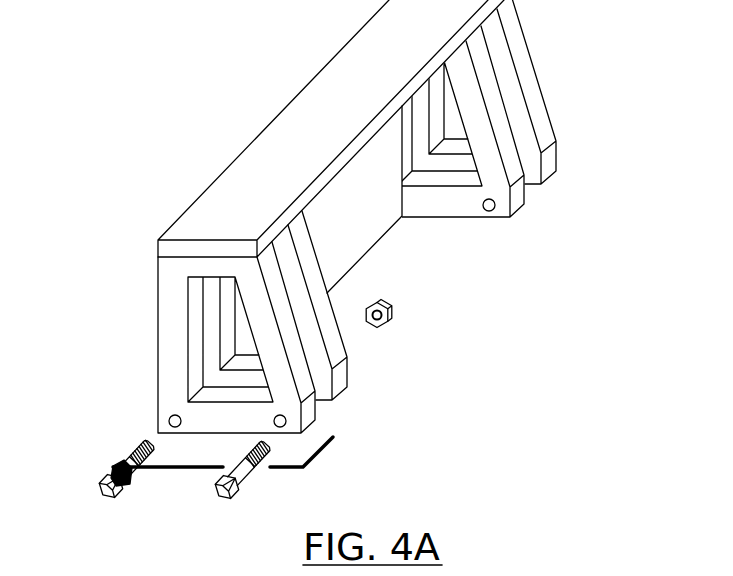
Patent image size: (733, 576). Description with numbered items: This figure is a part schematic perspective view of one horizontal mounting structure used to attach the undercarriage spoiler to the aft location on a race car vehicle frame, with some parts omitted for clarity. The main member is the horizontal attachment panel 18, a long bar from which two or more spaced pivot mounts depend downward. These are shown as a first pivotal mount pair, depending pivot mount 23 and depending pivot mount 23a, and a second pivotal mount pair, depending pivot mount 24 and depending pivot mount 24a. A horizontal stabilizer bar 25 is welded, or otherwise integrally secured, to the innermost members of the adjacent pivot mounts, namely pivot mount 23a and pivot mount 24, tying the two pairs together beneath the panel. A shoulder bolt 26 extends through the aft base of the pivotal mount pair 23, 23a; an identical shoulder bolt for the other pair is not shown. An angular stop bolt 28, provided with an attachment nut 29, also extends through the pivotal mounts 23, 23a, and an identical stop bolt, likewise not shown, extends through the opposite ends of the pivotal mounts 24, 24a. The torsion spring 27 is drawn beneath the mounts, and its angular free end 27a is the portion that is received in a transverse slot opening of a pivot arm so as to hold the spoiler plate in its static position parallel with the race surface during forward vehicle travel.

The horizontal attachment panel 18 is at (341, 49).
The depending pivot mount 23 is at (296, 322).
The depending pivot mount 23a is at (350, 359).
The depending pivot mount 24 is at (504, 108).
The depending pivot mount 24a is at (557, 141).
The horizontal stabilizer bar 25 is at (367, 256).
The shoulder bolt 26 is at (100, 477).
The torsion spring 27 is at (112, 466).
The free end of torsion spring 27a is at (322, 455).
The angular stop bolt 28 is at (240, 494).
The attachment nut 29 is at (391, 313).